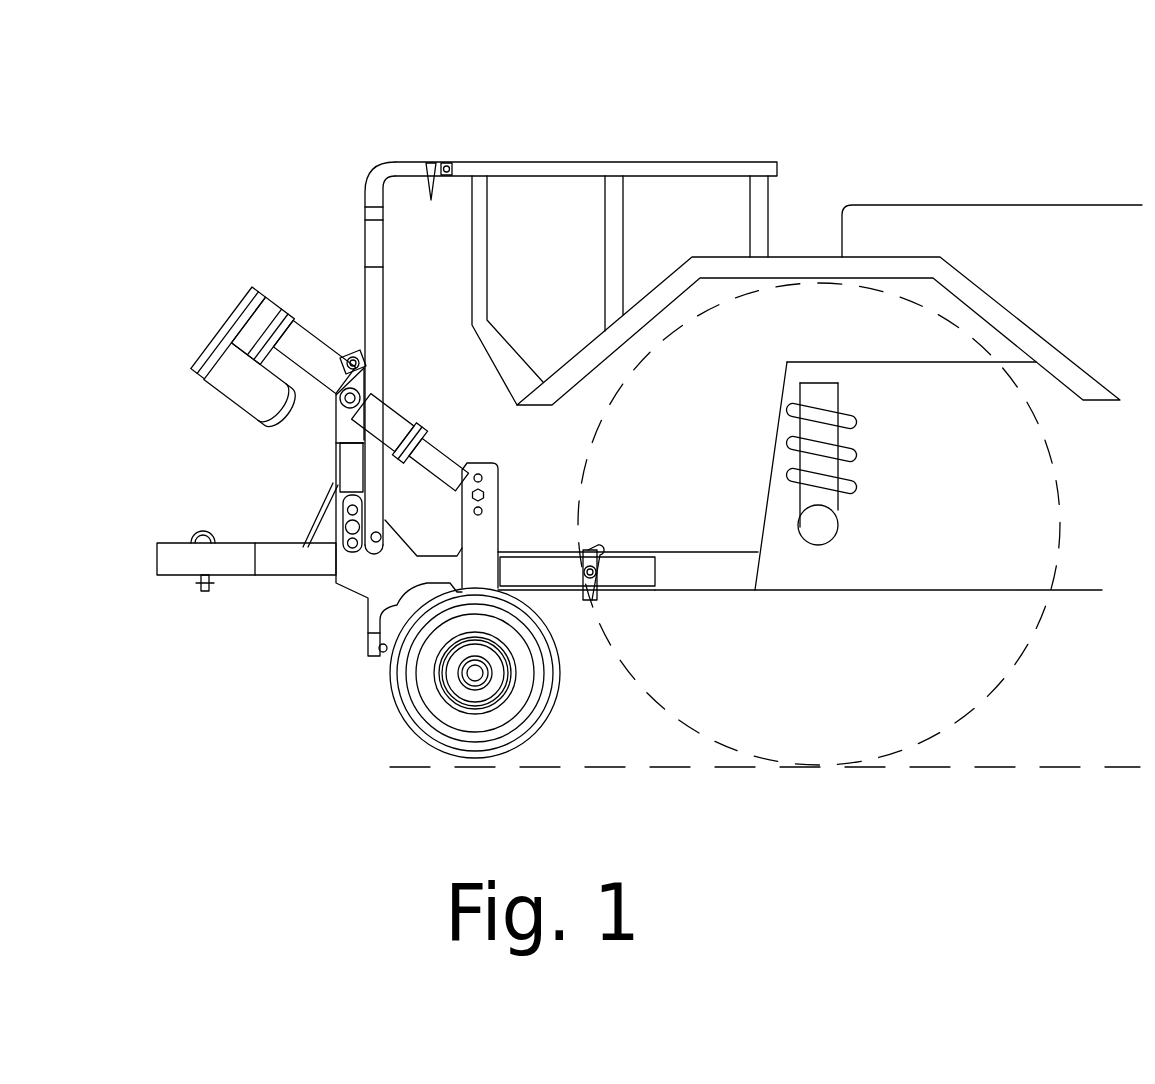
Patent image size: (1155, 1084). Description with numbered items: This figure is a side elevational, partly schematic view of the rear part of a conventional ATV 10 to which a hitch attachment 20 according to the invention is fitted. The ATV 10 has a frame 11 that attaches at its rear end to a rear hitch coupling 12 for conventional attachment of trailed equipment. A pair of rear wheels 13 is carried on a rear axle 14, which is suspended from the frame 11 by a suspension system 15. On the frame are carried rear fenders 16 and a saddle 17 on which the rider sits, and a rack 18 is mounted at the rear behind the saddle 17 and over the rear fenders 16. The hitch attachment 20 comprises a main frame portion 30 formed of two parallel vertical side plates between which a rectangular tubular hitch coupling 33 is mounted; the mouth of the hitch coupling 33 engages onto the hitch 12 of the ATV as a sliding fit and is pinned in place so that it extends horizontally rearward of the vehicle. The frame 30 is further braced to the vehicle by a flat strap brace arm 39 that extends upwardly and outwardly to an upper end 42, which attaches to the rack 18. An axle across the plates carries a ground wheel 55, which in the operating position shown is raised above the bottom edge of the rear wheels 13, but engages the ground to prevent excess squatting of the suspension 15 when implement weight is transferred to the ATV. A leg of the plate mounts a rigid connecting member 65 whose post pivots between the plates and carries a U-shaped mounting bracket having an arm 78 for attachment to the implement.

The ATV 10 is at (893, 158).
The frame 11 is at (948, 560).
The rear hitch coupling 12 is at (710, 570).
The rear wheels 13 is at (1020, 526).
The rear axle 14 is at (827, 532).
The suspension system 15 is at (825, 467).
The rear fenders 16 is at (903, 272).
The saddle 17 is at (1042, 215).
The rack 18 is at (625, 168).
The hitch attachment 20 is at (320, 617).
The main frame portion 30 is at (518, 478).
The hitch coupling 33 is at (573, 512).
The brace arm 39 is at (375, 268).
The upper end 42 is at (418, 162).
The wheel 55 is at (508, 742).
The rigid connecting member 65 is at (294, 518).
The arm 78 is at (277, 565).